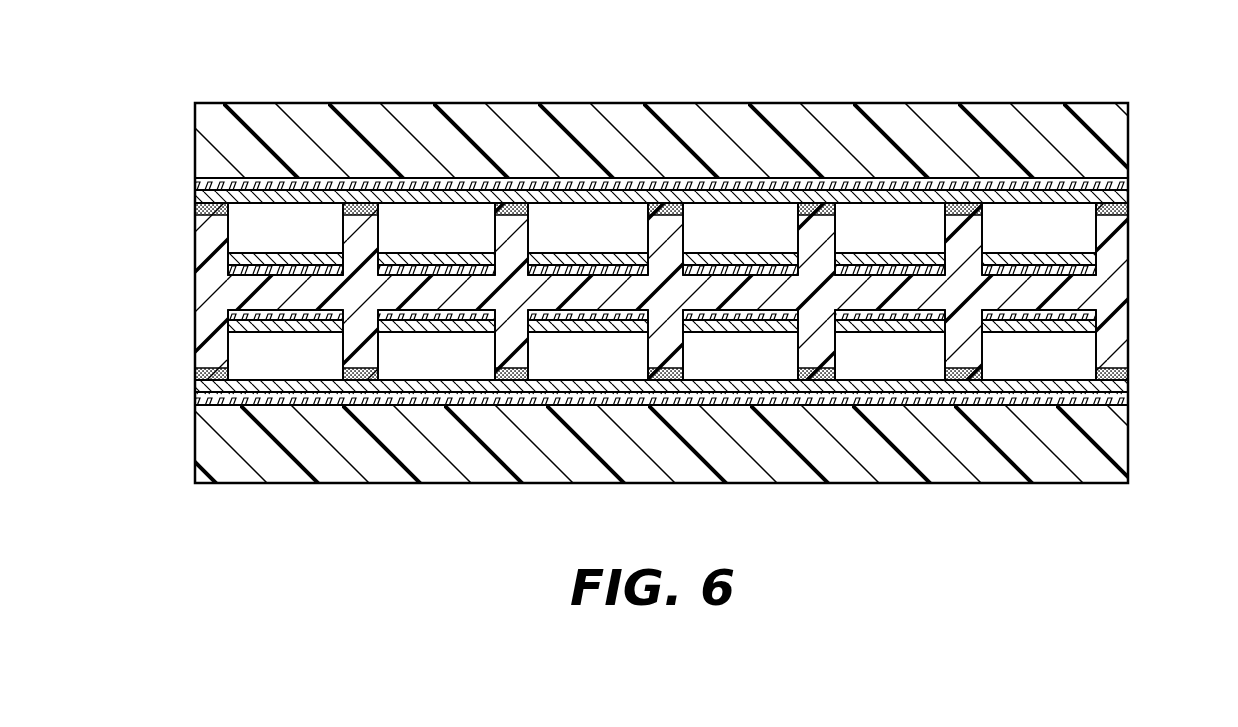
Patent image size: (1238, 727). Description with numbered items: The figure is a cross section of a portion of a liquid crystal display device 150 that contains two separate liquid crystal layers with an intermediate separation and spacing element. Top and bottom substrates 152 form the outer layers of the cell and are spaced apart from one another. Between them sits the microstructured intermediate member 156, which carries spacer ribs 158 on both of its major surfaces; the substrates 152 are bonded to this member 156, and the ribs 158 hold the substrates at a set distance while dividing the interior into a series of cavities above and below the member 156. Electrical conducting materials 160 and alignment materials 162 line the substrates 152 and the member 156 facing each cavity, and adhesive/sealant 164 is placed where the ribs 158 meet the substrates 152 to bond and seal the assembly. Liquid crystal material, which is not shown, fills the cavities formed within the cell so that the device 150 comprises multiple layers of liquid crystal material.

The display device 150 is at (339, 96).
The substrates 152 is at (441, 111).
The microstructured intermediate member 156 is at (196, 289).
The spacer ribs 158 is at (648, 228).
The electrical conducting materials 160 is at (1128, 181).
The alignment materials 162 is at (197, 193).
The adhesive/sealant 164 is at (197, 205).